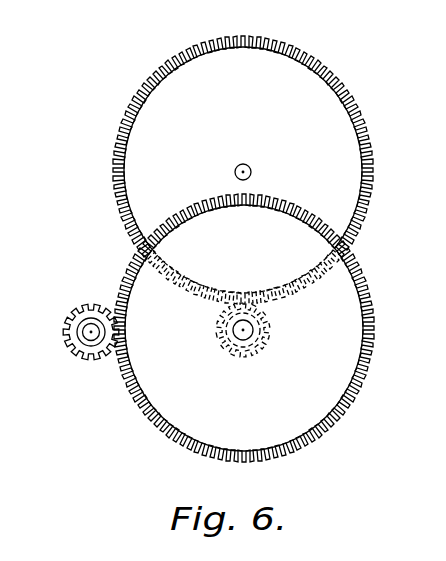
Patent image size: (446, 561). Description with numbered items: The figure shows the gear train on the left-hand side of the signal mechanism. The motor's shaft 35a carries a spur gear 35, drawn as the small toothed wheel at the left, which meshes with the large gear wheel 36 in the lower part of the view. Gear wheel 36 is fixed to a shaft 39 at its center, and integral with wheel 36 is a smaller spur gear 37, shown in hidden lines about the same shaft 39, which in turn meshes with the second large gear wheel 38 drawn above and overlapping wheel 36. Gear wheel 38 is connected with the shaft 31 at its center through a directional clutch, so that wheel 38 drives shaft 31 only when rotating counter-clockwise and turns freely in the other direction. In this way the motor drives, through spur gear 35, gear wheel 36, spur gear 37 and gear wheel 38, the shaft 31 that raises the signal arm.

The shaft 31 is at (250, 166).
The spur gear 35 is at (80, 356).
The shaft 35a is at (86, 324).
The gear wheel 36 is at (158, 428).
The spur gear 37 is at (268, 328).
The gear wheel 38 is at (113, 172).
The shaft 39 is at (240, 340).